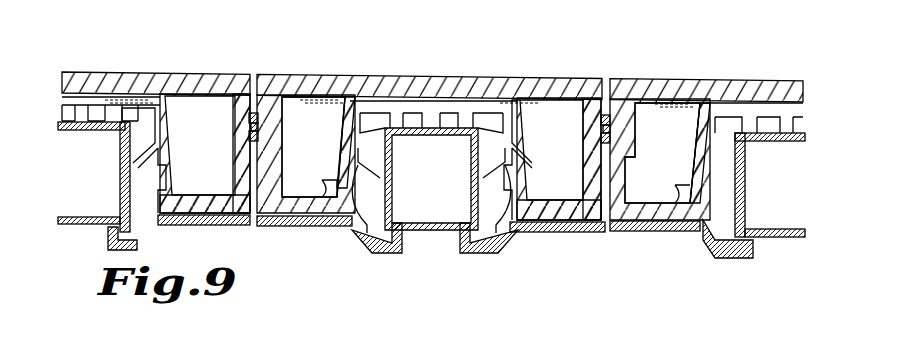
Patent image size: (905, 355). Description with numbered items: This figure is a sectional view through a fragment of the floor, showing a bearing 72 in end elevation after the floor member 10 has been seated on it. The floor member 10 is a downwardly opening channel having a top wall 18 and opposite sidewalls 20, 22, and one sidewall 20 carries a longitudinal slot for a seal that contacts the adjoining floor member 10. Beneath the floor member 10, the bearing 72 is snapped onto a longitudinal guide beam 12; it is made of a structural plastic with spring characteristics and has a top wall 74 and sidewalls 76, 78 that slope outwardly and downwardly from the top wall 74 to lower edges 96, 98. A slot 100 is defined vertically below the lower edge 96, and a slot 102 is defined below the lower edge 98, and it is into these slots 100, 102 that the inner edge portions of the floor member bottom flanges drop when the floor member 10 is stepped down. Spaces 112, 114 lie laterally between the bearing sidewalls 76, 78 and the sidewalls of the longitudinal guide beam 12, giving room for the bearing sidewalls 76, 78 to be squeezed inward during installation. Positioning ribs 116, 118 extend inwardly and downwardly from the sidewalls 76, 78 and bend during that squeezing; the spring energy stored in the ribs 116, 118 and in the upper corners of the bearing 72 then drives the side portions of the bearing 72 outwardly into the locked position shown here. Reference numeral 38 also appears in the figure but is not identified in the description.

The floor member 10 is at (136, 64).
The longitudinal guide beam 12 is at (77, 233).
The top wall 18 is at (196, 82).
The sidewall 20 is at (274, 162).
The sidewall 22 is at (238, 127).
The joint 38 is at (258, 115).
The bearing 72 is at (106, 262).
The top wall 74 is at (98, 103).
The sidewall 76 is at (338, 117).
The sidewall 78 is at (172, 98).
The lower edge 96 is at (327, 185).
The lower edge 98 is at (173, 192).
The slot 100 is at (335, 197).
The slot 102 is at (170, 197).
The space 112 is at (352, 228).
The space 114 is at (110, 233).
The positioning rib 116 is at (373, 150).
The positioning rib 118 is at (140, 148).